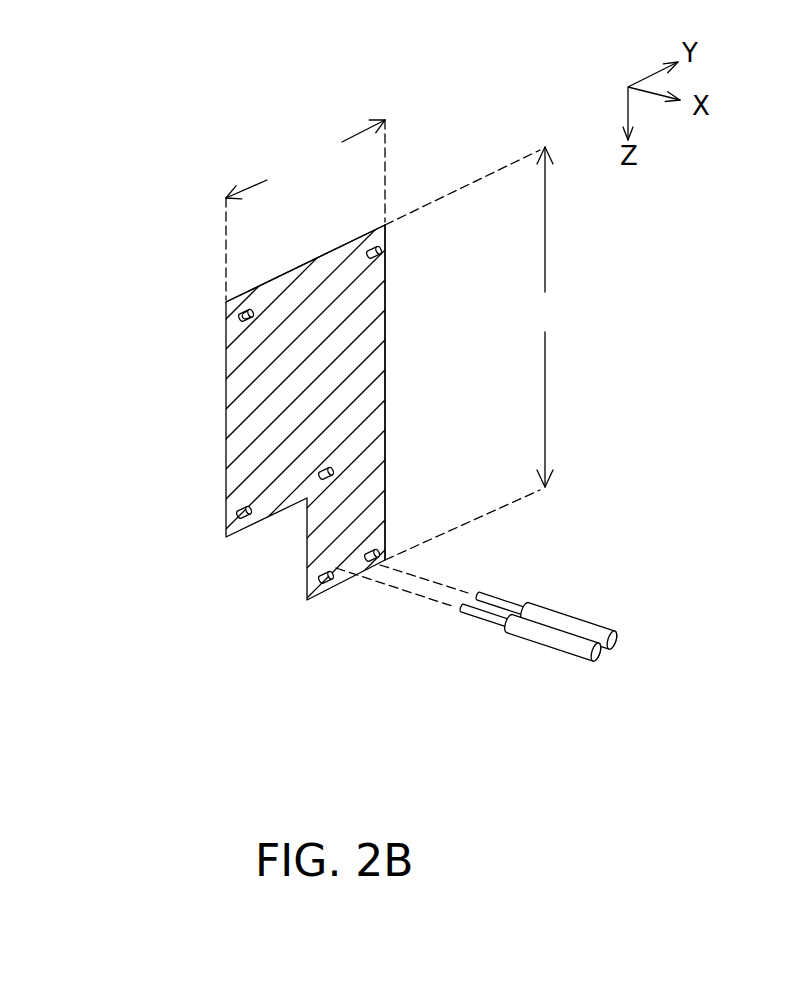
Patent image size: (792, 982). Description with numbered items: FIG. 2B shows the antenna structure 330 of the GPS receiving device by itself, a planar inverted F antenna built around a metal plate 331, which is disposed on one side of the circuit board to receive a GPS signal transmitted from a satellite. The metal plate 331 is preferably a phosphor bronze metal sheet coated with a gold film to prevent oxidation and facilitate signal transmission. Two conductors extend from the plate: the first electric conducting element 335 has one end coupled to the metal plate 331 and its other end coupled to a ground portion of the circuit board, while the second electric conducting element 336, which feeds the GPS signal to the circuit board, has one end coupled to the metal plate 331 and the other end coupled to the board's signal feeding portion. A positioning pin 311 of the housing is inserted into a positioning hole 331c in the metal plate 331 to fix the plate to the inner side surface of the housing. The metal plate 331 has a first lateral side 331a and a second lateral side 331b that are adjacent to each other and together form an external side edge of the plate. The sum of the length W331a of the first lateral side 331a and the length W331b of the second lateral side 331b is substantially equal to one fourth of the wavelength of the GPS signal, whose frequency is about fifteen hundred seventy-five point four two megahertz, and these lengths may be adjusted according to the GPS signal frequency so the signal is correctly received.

The antenna structure 330 is at (396, 467).
The metal plate 331 is at (281, 487).
The first lateral side 331a is at (310, 262).
The second lateral side 331b is at (387, 393).
The positioning hole 331c is at (244, 315).
The positioning pin 311 is at (249, 302).
The first electric conducting element 335 is at (550, 632).
The second electric conducting element 336 is at (570, 616).
The length of the first lateral side W331a is at (305, 210).
The length of the second lateral side W331b is at (494, 353).